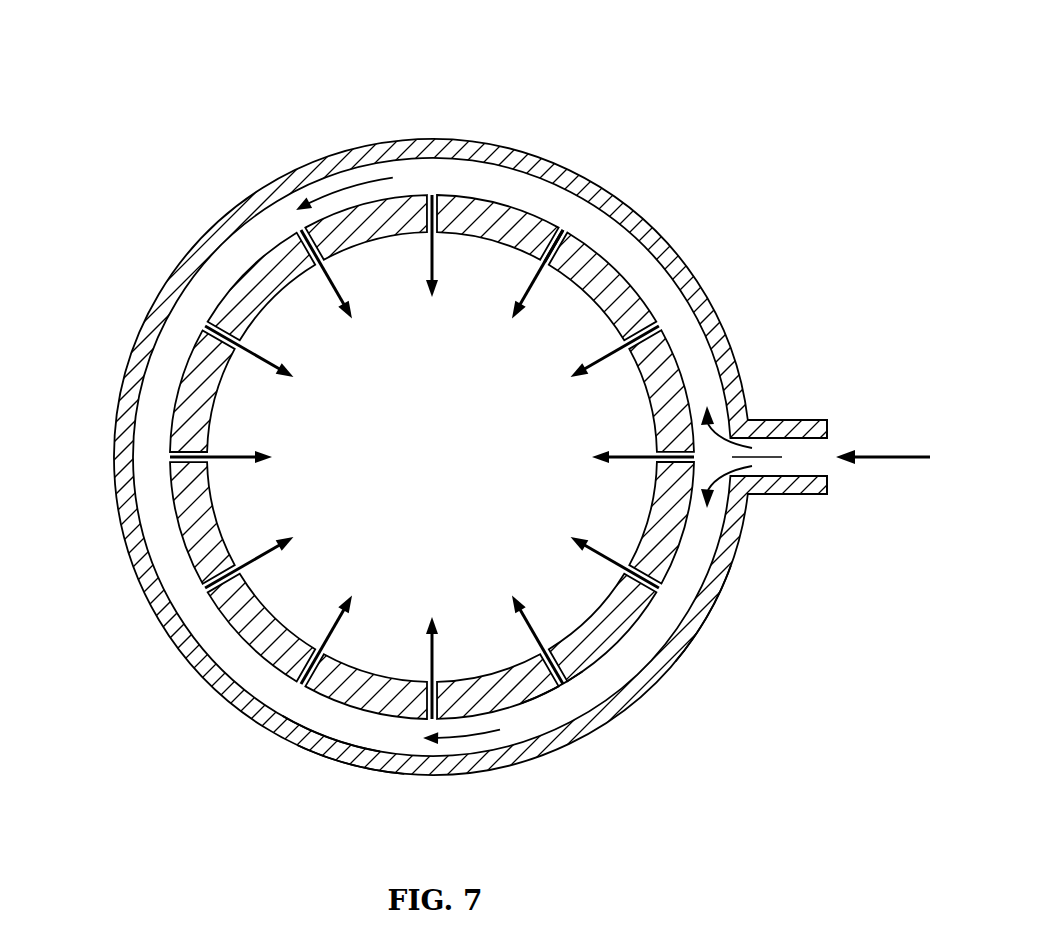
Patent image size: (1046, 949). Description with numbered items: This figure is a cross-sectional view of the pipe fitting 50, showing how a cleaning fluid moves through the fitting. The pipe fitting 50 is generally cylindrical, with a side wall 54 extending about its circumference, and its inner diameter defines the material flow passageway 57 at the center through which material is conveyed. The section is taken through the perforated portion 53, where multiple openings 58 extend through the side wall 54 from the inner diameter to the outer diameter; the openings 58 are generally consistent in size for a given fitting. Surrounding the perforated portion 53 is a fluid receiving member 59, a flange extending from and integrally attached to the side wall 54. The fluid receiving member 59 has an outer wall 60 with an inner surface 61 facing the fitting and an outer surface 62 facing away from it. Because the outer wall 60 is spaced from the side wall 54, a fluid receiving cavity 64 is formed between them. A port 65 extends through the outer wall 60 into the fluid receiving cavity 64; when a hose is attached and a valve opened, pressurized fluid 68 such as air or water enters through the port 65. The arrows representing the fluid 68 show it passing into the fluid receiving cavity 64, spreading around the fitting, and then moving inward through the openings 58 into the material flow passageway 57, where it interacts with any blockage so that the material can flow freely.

The pipe fitting 50 is at (536, 68).
The perforated portion 53 is at (675, 358).
The side wall 54 is at (513, 217).
The material flow passageway 57 is at (419, 471).
The openings 58 is at (558, 239).
The fluid receiving member 59 is at (712, 588).
The outer wall 60 is at (172, 628).
The inner surface 61 is at (303, 727).
The outer surface 62 is at (358, 768).
The fluid receiving cavity 64 is at (566, 700).
The port 65 is at (807, 420).
The pressurized fluid 68 is at (347, 187).